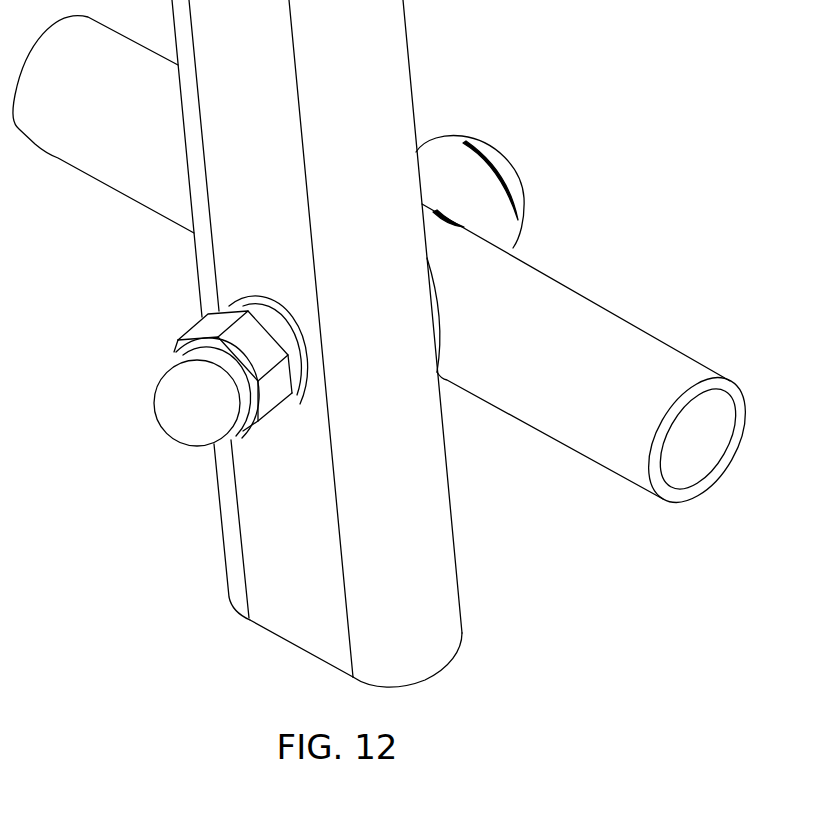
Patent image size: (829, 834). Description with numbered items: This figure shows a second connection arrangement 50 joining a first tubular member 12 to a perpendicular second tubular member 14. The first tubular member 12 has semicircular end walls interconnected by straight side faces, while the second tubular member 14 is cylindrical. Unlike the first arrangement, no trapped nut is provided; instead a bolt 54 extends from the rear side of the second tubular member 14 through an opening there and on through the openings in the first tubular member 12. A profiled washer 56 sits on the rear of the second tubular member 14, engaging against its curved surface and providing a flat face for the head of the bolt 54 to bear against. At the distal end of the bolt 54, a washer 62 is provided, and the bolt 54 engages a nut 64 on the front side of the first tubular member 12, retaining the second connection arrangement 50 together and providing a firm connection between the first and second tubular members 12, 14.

The first tubular member 12 is at (413, 601).
The second tubular member 14 is at (637, 358).
The second connection arrangement 50 is at (180, 374).
The bolt 54 is at (510, 177).
The profiled washer 56 is at (443, 160).
The washer 62 is at (251, 293).
The nut 64 is at (198, 420).